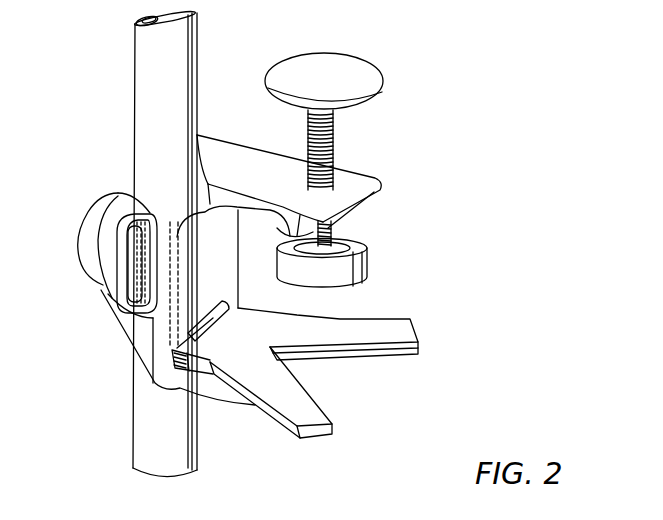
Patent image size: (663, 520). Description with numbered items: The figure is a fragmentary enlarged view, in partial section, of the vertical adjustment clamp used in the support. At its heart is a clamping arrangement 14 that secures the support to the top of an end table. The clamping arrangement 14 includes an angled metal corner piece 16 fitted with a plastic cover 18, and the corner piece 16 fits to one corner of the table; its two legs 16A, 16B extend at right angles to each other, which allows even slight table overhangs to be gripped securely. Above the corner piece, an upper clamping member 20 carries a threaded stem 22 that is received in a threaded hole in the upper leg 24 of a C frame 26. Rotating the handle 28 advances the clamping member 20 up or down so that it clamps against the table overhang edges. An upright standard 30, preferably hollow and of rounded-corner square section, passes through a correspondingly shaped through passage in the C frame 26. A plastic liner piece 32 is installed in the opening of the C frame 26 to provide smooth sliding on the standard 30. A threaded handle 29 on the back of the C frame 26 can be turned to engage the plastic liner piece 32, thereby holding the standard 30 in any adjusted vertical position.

The clamping arrangement 14 is at (418, 167).
The angled metal corner piece 16 is at (345, 395).
The leg 16A is at (263, 412).
The leg 16B is at (393, 358).
The plastic cover 18 is at (360, 330).
The upper clamping member 20 is at (368, 257).
The threaded stem 22 is at (310, 133).
The upper leg 24 is at (347, 167).
The C frame 26 is at (123, 340).
The handle 28 is at (292, 68).
The threaded handle 29 is at (93, 197).
The upright standard 30 is at (140, 62).
The plastic liner piece 32 is at (105, 299).